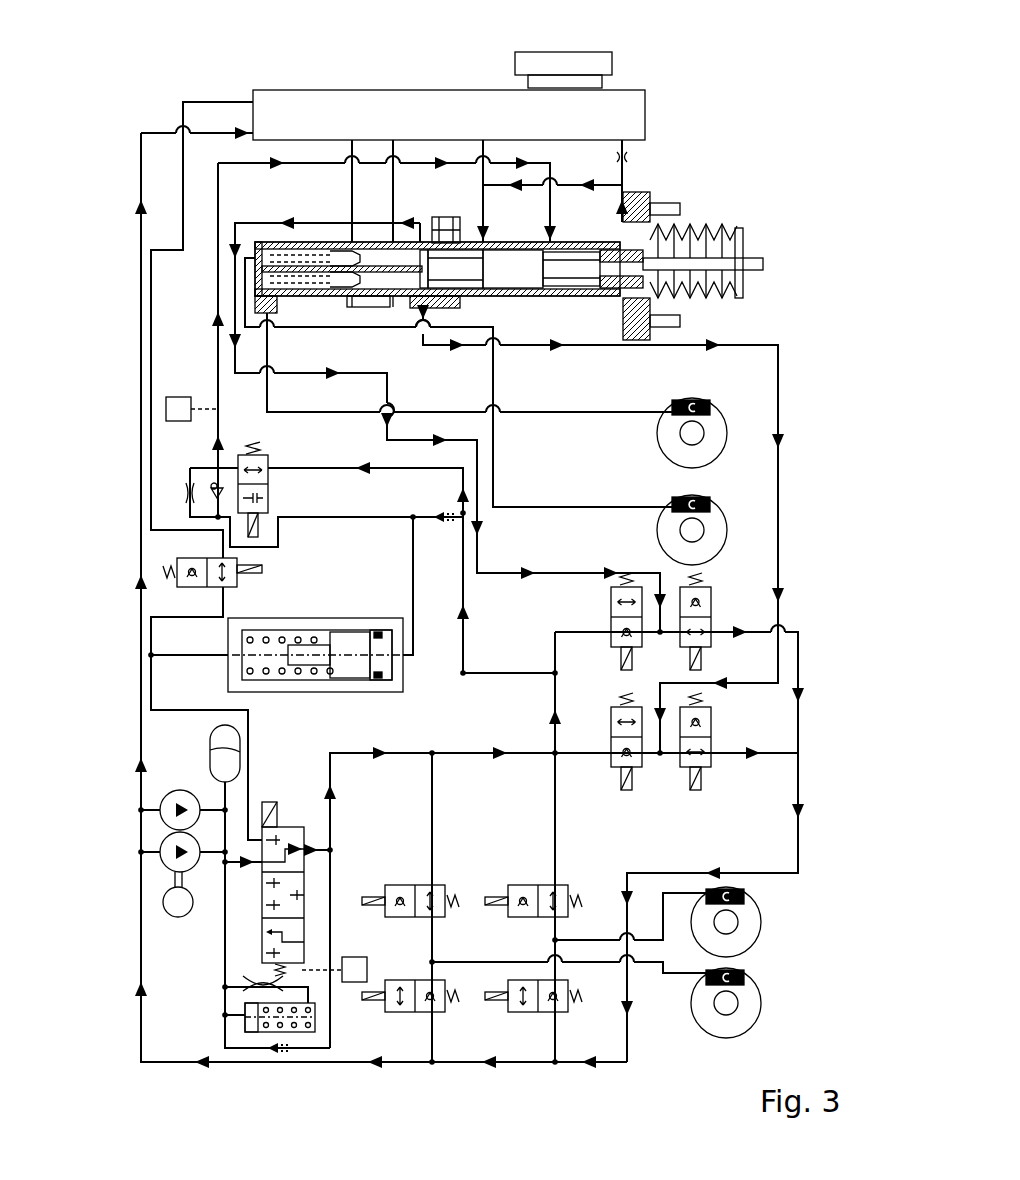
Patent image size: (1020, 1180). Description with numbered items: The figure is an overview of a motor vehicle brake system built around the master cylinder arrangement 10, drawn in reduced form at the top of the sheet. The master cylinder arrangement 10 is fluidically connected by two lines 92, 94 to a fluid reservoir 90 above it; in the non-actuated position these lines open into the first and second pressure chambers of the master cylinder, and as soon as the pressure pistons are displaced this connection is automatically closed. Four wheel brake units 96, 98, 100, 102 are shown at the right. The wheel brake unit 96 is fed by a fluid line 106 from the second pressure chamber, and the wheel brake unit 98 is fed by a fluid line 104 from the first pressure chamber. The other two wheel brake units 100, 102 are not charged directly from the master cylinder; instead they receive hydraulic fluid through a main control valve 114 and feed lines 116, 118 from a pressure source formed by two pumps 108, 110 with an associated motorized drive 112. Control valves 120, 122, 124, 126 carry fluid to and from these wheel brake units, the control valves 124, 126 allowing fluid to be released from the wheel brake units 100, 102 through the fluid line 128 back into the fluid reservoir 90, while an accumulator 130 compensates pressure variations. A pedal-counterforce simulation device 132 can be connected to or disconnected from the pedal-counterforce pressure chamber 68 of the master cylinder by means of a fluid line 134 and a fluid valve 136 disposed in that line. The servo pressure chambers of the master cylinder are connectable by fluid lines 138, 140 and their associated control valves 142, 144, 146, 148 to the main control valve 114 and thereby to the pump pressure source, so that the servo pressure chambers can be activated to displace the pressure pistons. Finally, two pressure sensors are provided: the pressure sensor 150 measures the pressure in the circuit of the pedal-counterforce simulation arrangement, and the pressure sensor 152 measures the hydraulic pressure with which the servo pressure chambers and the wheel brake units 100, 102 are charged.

The master cylinder arrangement 10 is at (692, 218).
The pedal-counterforce pressure chamber 68 is at (578, 257).
The fluid reservoir 90 is at (298, 102).
The line 92 is at (356, 163).
The line 94 is at (400, 150).
The wheel brake unit 96 is at (716, 425).
The wheel brake unit 98 is at (718, 530).
The wheel brake unit 100 is at (752, 922).
The wheel brake unit 102 is at (752, 1003).
The fluid line 104 is at (650, 503).
The fluid line 106 is at (657, 405).
The pump 108 is at (163, 792).
The pump 110 is at (163, 838).
The motorized drive 112 is at (167, 912).
The main control valve 114 is at (263, 950).
The feed line 116 is at (678, 893).
The feed line 118 is at (678, 972).
The control valve 120 is at (445, 885).
The control valve 122 is at (568, 885).
The control valve 124 is at (410, 1003).
The control valve 126 is at (530, 1003).
The fluid line 128 is at (125, 550).
The accumulator 130 is at (310, 1025).
The pedal-counterforce simulation device 132 is at (302, 625).
The fluid line 134 is at (217, 278).
The fluid valve 136 is at (243, 499).
The fluid line 138 is at (772, 356).
The fluid line 140 is at (248, 224).
The control valve 142 is at (613, 613).
The control valve 144 is at (706, 595).
The control valve 146 is at (612, 708).
The control valve 148 is at (712, 722).
The pressure sensor 150 is at (170, 397).
The pressure sensor 152 is at (352, 982).